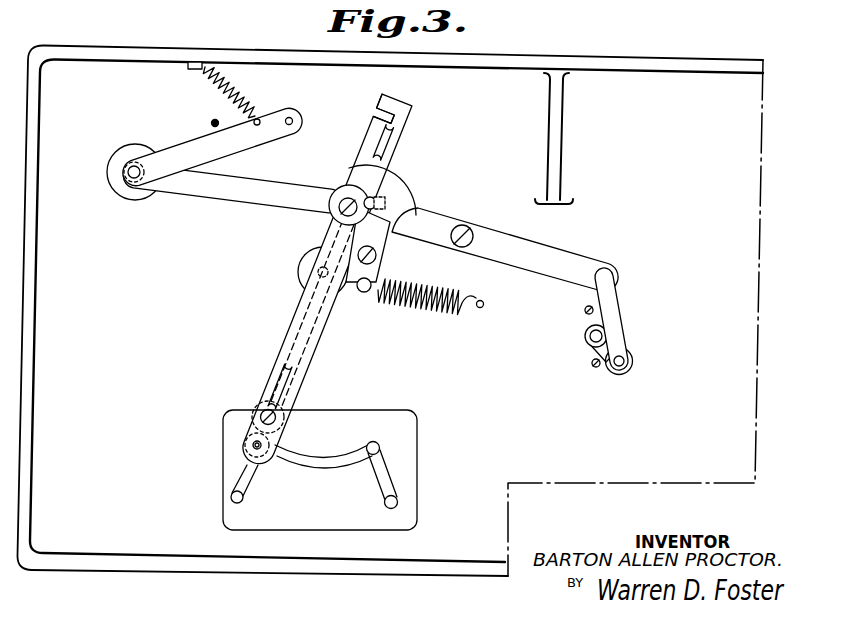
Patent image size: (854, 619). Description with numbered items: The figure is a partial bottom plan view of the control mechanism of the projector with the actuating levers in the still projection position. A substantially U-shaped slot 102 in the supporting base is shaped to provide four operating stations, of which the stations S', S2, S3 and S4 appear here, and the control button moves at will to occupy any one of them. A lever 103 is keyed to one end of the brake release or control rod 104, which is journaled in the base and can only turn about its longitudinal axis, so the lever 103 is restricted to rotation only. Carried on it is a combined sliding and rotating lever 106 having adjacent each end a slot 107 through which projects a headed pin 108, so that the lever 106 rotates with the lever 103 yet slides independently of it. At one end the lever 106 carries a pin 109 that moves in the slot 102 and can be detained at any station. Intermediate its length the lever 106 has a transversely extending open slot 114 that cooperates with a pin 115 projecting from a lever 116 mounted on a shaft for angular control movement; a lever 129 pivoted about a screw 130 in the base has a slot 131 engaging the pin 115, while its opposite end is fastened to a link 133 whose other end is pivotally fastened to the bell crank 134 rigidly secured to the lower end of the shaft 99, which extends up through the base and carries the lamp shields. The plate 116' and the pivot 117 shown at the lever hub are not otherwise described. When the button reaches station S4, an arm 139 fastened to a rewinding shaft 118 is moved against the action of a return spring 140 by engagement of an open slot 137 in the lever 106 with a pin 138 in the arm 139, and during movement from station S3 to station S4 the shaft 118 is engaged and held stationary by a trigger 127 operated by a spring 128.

The shaft 99 is at (584, 333).
The U-shaped slot 102 is at (383, 465).
The lever 103 is at (302, 318).
The brake release or control rod 104 is at (300, 282).
The combined sliding and rotating lever 106 is at (396, 129).
The slot 107 is at (390, 147).
The headed pin 108 is at (265, 411).
The pin 109 is at (253, 449).
The transversely extending recess or open slot 114 is at (387, 203).
The pin 115 is at (330, 208).
The lever 116 is at (232, 201).
The plate 116' is at (402, 190).
The pivot pin 117 is at (134, 166).
The shaft 118 is at (124, 181).
The trigger 127 is at (387, 235).
The spring 128 is at (408, 304).
The lever 129 is at (554, 258).
The screw 130 is at (472, 230).
The slot 131 is at (336, 196).
The link 133 is at (614, 309).
The bell crank 134 is at (591, 348).
The open slot 137 is at (394, 101).
The pin 138 is at (294, 120).
The arm 139 is at (188, 146).
The return spring 140 is at (233, 79).
The pin S' is at (204, 501).
The operating station S2 is at (255, 445).
The operating station S3 is at (376, 442).
The operating station S4 is at (398, 497).